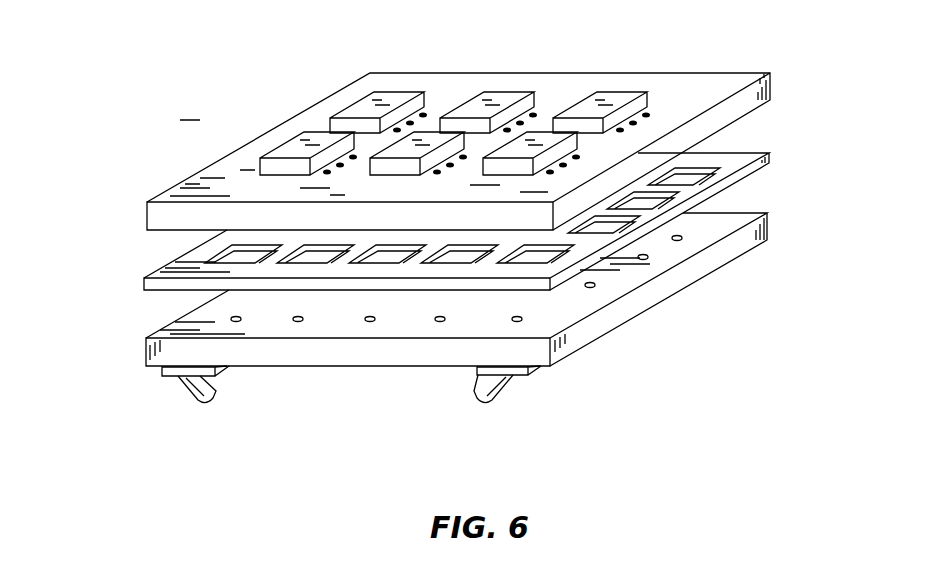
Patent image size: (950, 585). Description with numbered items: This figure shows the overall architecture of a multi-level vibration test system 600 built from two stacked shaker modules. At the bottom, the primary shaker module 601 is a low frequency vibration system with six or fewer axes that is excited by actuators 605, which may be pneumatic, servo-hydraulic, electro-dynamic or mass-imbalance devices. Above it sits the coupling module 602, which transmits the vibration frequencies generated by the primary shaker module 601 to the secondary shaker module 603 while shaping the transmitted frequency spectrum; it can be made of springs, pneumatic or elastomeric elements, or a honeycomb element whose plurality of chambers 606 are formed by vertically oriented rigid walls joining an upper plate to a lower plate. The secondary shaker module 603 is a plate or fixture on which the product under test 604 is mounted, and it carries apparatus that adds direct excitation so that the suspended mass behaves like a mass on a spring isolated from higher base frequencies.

The multi-level vibration test system 600 is at (88, 448).
The primary shaker module 601 is at (770, 226).
The coupling module 602 is at (770, 155).
The secondary shaker module 603 is at (773, 73).
The product under test 604 is at (640, 93).
The actuators 605 is at (490, 386).
The chambers 606 is at (228, 250).